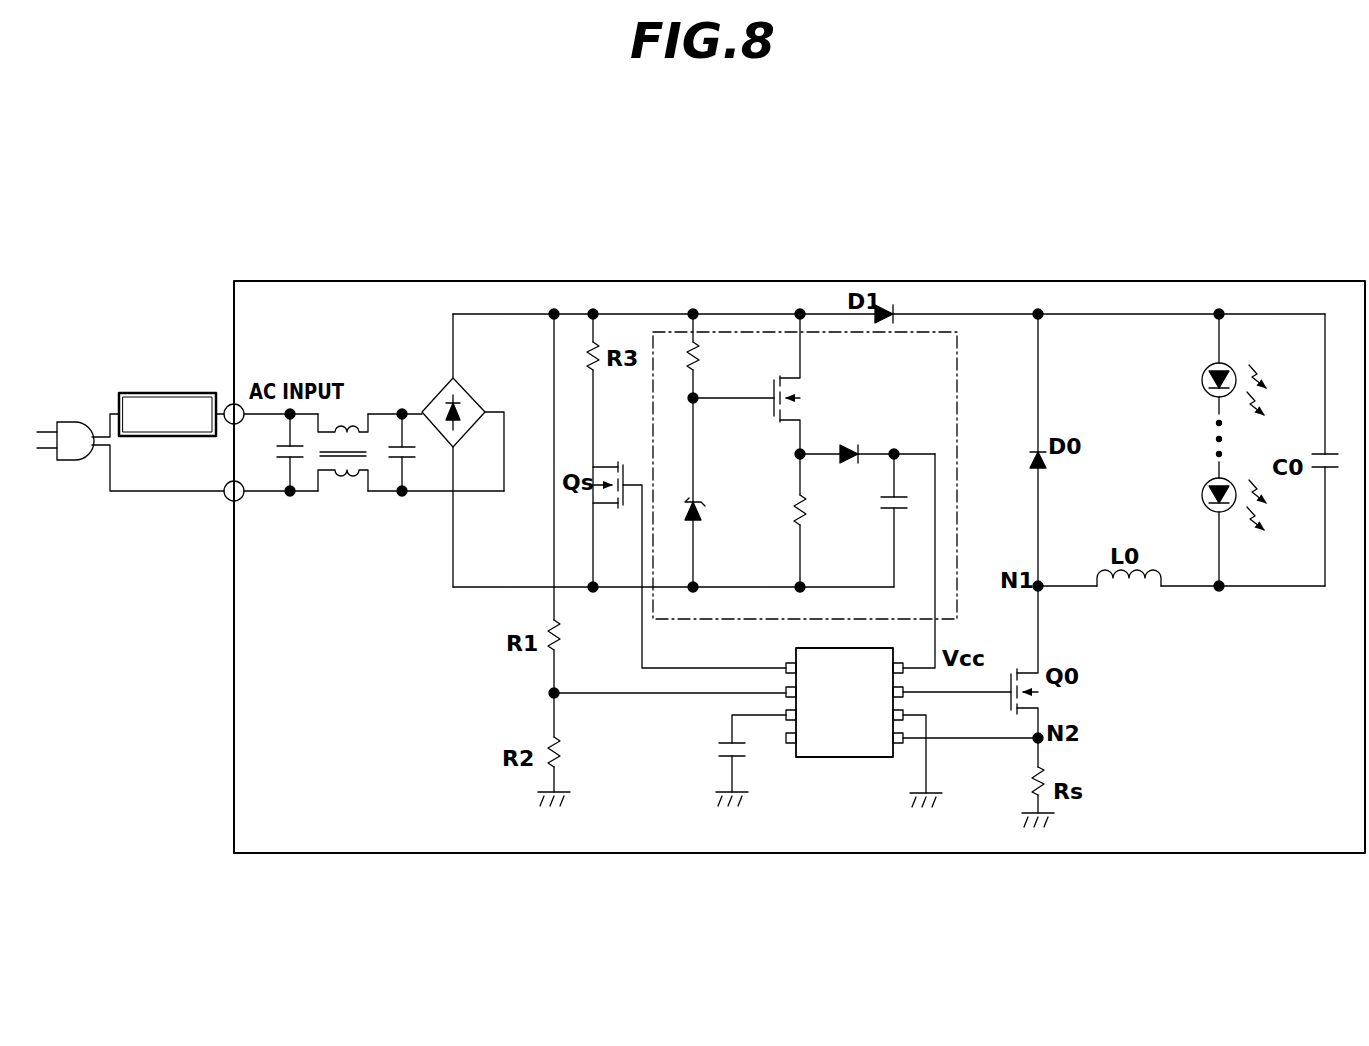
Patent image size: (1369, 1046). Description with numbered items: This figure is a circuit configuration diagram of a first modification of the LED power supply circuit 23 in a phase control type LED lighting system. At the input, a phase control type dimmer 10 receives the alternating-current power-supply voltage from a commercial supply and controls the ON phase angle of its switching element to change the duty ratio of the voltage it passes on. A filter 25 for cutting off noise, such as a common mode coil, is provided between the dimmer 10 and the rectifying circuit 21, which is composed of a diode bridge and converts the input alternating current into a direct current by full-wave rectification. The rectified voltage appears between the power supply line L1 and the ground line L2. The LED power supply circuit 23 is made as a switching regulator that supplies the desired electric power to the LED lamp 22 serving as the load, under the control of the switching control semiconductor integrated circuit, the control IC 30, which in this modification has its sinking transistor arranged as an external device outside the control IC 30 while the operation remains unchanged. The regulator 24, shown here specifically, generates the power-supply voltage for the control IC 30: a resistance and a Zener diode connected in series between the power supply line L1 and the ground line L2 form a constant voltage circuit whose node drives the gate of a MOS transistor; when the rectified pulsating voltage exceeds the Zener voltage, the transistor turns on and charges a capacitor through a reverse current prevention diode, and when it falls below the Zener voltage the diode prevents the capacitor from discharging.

The phase control type dimmer 10 is at (170, 391).
The rectifying circuit 21 is at (434, 376).
The LED lamp 22 is at (1174, 439).
The LED power supply circuit 23 is at (1098, 280).
The regulator 24 is at (947, 331).
The filter 25 is at (349, 509).
The control IC 30 is at (835, 758).
The power supply line L1 is at (487, 315).
The ground line L2 is at (470, 588).